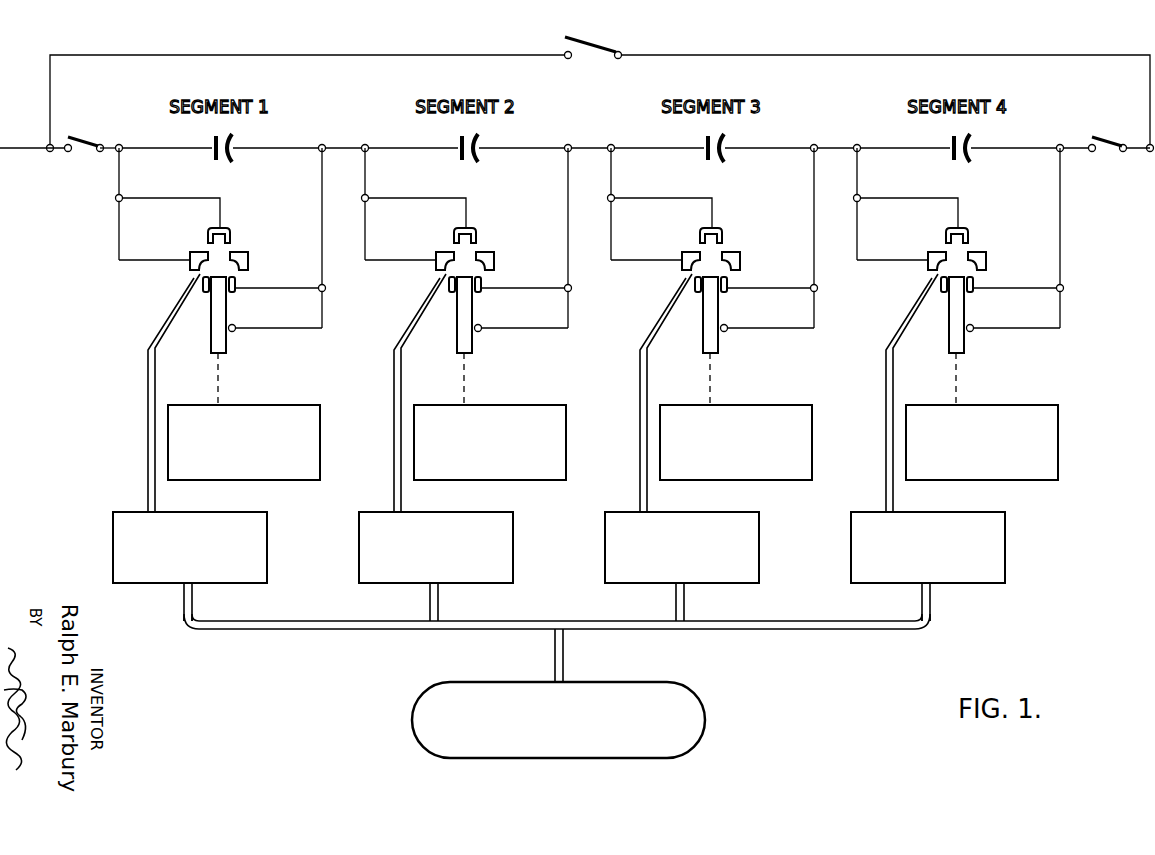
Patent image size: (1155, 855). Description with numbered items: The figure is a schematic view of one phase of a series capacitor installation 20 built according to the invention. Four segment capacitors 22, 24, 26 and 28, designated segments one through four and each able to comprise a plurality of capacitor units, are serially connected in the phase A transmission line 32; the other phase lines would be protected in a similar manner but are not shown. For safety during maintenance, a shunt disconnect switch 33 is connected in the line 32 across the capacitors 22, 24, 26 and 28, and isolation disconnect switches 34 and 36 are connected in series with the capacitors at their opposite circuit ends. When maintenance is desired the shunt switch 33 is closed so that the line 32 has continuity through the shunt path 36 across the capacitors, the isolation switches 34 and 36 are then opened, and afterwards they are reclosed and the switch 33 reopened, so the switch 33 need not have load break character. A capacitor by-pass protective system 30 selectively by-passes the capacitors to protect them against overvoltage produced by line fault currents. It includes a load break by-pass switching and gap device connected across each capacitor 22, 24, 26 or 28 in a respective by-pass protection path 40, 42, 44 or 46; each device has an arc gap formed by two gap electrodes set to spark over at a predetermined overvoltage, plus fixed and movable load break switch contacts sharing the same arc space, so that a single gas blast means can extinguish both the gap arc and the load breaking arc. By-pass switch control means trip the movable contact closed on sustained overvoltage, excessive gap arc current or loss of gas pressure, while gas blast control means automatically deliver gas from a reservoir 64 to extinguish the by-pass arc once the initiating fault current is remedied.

The series capacitor installation 20 is at (1112, 296).
The segment capacitor 22 is at (222, 135).
The segment capacitor 24 is at (482, 140).
The segment capacitor 26 is at (728, 140).
The segment capacitor 28 is at (974, 140).
The capacitor by-pass protective system 30 is at (609, 360).
The transmission line 32 is at (19, 148).
The shunt disconnect switch 33 is at (598, 45).
The isolation disconnect switch 34 is at (90, 147).
The isolation disconnect switch and shunt path 36 is at (333, 52).
The by-pass protection path 40 is at (119, 172).
The by-pass protection path 42 is at (466, 238).
The by-pass protection path 44 is at (712, 238).
The by-pass protection path 46 is at (958, 238).
The gas reservoir 64 is at (666, 682).